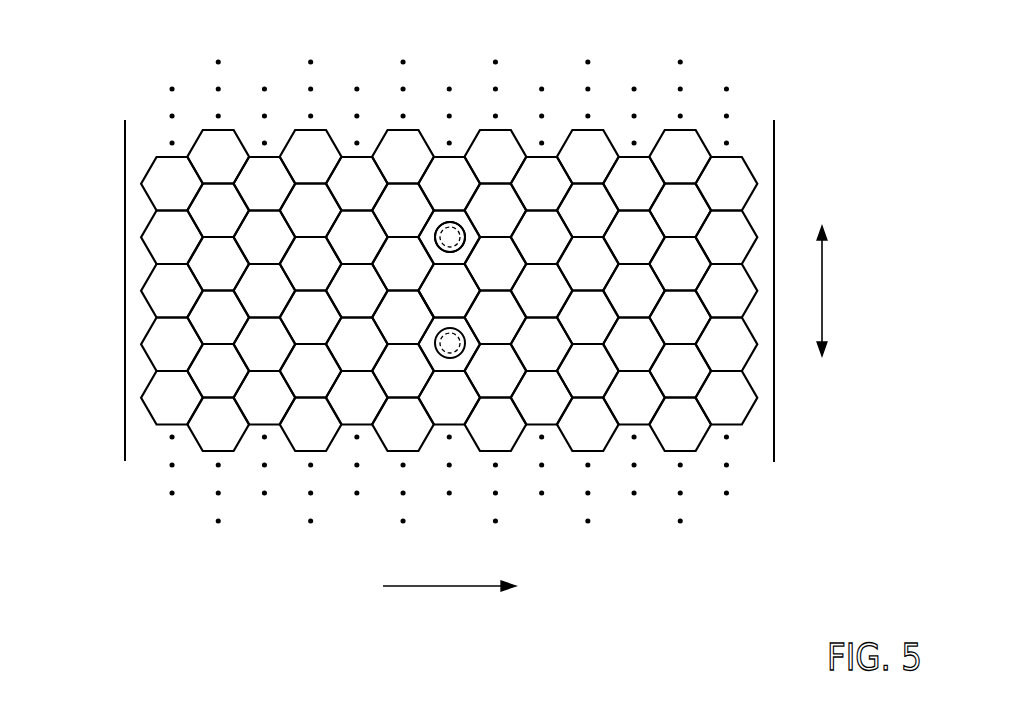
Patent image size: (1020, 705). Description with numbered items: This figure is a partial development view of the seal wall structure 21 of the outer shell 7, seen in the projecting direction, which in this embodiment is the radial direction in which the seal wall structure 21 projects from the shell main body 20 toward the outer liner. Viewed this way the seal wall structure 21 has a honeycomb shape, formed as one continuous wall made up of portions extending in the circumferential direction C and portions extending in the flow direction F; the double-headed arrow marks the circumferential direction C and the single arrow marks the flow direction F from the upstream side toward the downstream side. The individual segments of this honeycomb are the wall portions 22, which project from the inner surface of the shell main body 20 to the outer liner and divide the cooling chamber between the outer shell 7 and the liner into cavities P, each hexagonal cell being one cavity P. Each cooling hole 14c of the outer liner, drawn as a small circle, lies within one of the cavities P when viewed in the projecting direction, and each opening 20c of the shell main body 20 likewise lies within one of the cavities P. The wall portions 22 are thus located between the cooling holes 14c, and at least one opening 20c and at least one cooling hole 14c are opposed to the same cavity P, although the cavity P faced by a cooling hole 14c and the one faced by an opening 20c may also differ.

The outer shell 7 is at (403, 289).
The shell main body 20 is at (138, 142).
The seal wall structure 21 is at (138, 203).
The opening 20c is at (432, 233).
The cooling hole 14c is at (462, 226).
The wall portion 22 is at (425, 303).
The cavity P is at (472, 250).
The circumferential direction C is at (822, 290).
The flow direction F is at (443, 588).